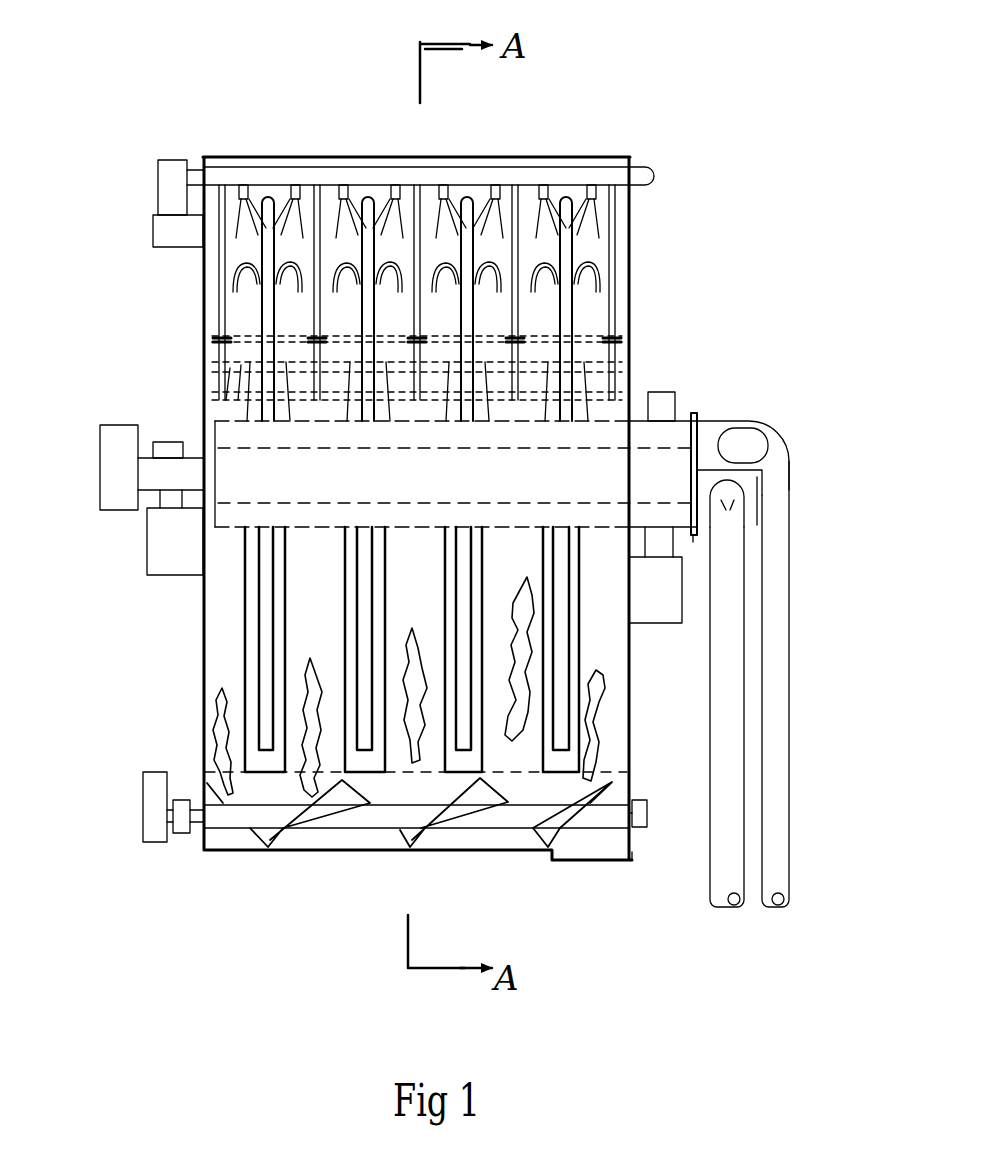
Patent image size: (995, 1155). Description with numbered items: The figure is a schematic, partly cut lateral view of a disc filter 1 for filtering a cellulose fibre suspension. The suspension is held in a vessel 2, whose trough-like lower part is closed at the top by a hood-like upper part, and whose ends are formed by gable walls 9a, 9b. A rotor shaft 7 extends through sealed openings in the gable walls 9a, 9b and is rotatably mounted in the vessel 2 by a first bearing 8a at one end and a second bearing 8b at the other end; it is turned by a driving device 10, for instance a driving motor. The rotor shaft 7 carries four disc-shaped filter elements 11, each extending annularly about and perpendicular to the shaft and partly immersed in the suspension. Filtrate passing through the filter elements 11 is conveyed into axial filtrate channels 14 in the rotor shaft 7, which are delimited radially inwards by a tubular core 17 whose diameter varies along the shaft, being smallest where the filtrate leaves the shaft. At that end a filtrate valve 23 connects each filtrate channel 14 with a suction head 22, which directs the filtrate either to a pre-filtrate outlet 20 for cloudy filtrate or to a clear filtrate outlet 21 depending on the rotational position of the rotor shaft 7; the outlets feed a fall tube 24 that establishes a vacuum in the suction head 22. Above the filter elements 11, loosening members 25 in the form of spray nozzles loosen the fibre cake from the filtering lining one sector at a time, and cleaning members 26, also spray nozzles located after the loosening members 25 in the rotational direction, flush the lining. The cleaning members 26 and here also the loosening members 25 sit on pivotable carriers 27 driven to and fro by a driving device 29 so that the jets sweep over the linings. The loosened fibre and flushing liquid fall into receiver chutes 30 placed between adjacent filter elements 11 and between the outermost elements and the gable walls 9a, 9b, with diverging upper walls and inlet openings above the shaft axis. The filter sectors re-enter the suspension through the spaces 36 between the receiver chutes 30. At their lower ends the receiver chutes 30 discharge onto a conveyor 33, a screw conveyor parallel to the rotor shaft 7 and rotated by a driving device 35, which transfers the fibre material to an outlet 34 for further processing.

The disc filter 1 is at (580, 64).
The vessel 2 is at (182, 714).
The rotor shaft 7 is at (639, 416).
The first bearing 8a is at (660, 545).
The second bearing 8b is at (165, 512).
The gable wall 9a is at (630, 720).
The gable wall 9b is at (200, 590).
The driving device 10 is at (106, 438).
The filter element 11 is at (568, 188).
The filtrate channel 14 is at (693, 418).
The tubular core 17 is at (225, 455).
The pre-filtrate outlet 20 is at (738, 496).
The clear filtrate outlet 21 is at (745, 445).
The suction head 22 is at (715, 432).
The filtrate valve 23 is at (745, 475).
The fall tube 24 is at (783, 752).
The loosening member 25 is at (297, 193).
The cleaning member 26 is at (225, 392).
The pivotable carrier 27 is at (217, 253).
The driving device 29 is at (174, 174).
The receiver chute 30 is at (248, 652).
The conveyor 33 is at (487, 818).
The outlet 34 is at (588, 862).
The driving device 35 is at (148, 782).
The space 36 is at (310, 628).